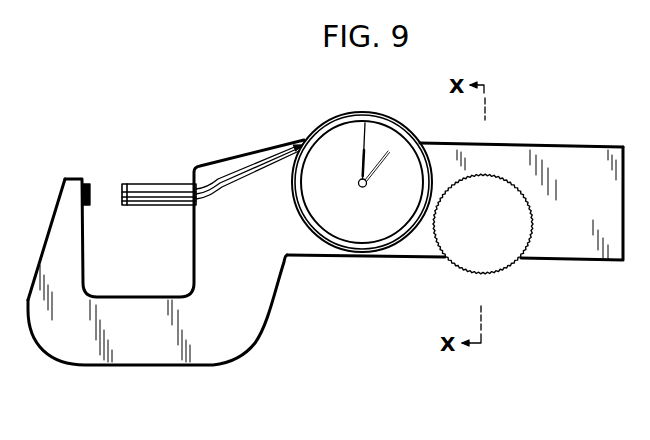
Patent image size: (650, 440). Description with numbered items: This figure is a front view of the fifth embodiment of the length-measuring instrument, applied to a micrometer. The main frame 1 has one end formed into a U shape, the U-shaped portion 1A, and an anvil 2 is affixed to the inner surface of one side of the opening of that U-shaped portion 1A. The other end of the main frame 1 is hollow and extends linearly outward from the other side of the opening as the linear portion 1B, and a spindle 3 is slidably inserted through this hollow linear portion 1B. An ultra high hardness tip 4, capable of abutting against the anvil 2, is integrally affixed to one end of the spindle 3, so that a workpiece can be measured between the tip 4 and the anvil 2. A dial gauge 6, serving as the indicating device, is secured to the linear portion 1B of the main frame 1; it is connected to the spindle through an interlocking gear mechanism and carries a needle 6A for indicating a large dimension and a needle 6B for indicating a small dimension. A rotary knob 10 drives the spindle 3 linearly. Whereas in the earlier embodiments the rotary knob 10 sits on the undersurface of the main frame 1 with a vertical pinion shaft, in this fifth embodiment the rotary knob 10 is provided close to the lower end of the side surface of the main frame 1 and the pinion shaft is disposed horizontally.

The main frame 1 is at (265, 173).
The U-shaped portion 1A is at (153, 364).
The linear portion 1B is at (575, 167).
The anvil 2 is at (89, 183).
The spindle 3 is at (168, 190).
The ultra high hardness tip 4 is at (127, 184).
The dial gauge 6 is at (384, 140).
The needle for indicating a large dimension 6A is at (384, 156).
The needle for indicating a small dimension 6B is at (363, 141).
The rotary knob 10 is at (510, 265).